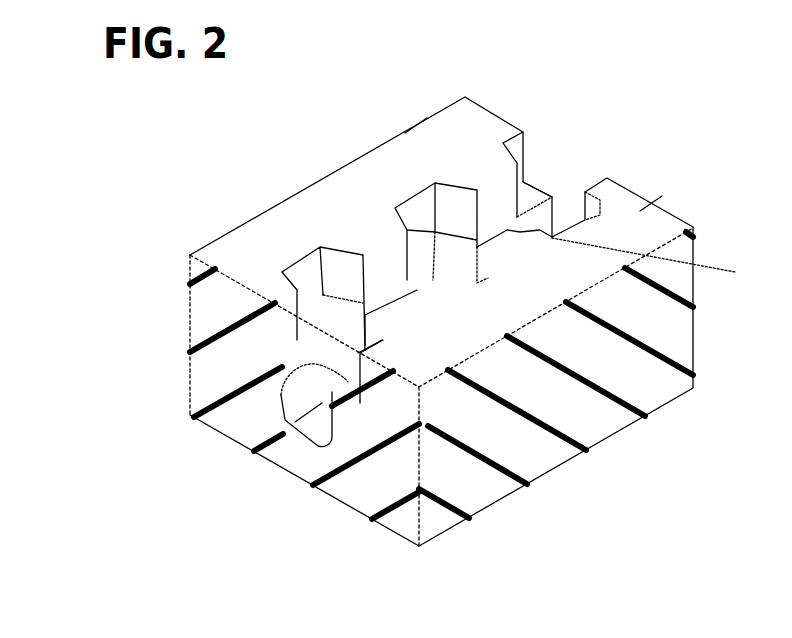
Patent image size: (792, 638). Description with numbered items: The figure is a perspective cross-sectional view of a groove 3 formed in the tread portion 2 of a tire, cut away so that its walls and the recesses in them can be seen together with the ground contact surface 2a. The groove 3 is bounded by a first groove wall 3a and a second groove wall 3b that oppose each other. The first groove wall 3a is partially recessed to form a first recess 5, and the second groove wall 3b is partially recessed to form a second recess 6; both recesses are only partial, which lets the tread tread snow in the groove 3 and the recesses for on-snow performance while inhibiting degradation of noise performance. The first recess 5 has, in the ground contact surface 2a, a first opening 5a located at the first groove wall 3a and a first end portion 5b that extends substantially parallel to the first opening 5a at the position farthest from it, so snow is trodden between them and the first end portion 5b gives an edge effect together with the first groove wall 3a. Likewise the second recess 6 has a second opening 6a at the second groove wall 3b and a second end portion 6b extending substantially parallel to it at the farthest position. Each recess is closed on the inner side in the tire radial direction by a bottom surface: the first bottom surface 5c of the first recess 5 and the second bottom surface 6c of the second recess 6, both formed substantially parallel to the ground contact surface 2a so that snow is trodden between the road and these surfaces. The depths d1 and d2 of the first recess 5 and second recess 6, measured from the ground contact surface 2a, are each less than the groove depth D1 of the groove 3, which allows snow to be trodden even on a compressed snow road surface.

The tread portion 2 is at (555, 87).
The ground contact surface 2a is at (447, 139).
The groove 3 is at (557, 183).
The first groove wall 3a is at (659, 260).
The second groove wall 3b is at (479, 186).
The first recess 5 is at (420, 213).
The first opening 5a is at (351, 242).
The first end portion 5b is at (312, 286).
The first bottom surface 5c is at (306, 253).
The second recess 6 is at (480, 250).
The second opening 6a is at (407, 282).
The second end portion 6b is at (436, 240).
The second bottom surface 6c is at (280, 310).
The depth of the first recess d1 is at (388, 210).
The depth of the second recess d2 is at (190, 307).
The groove depth D1 is at (190, 373).